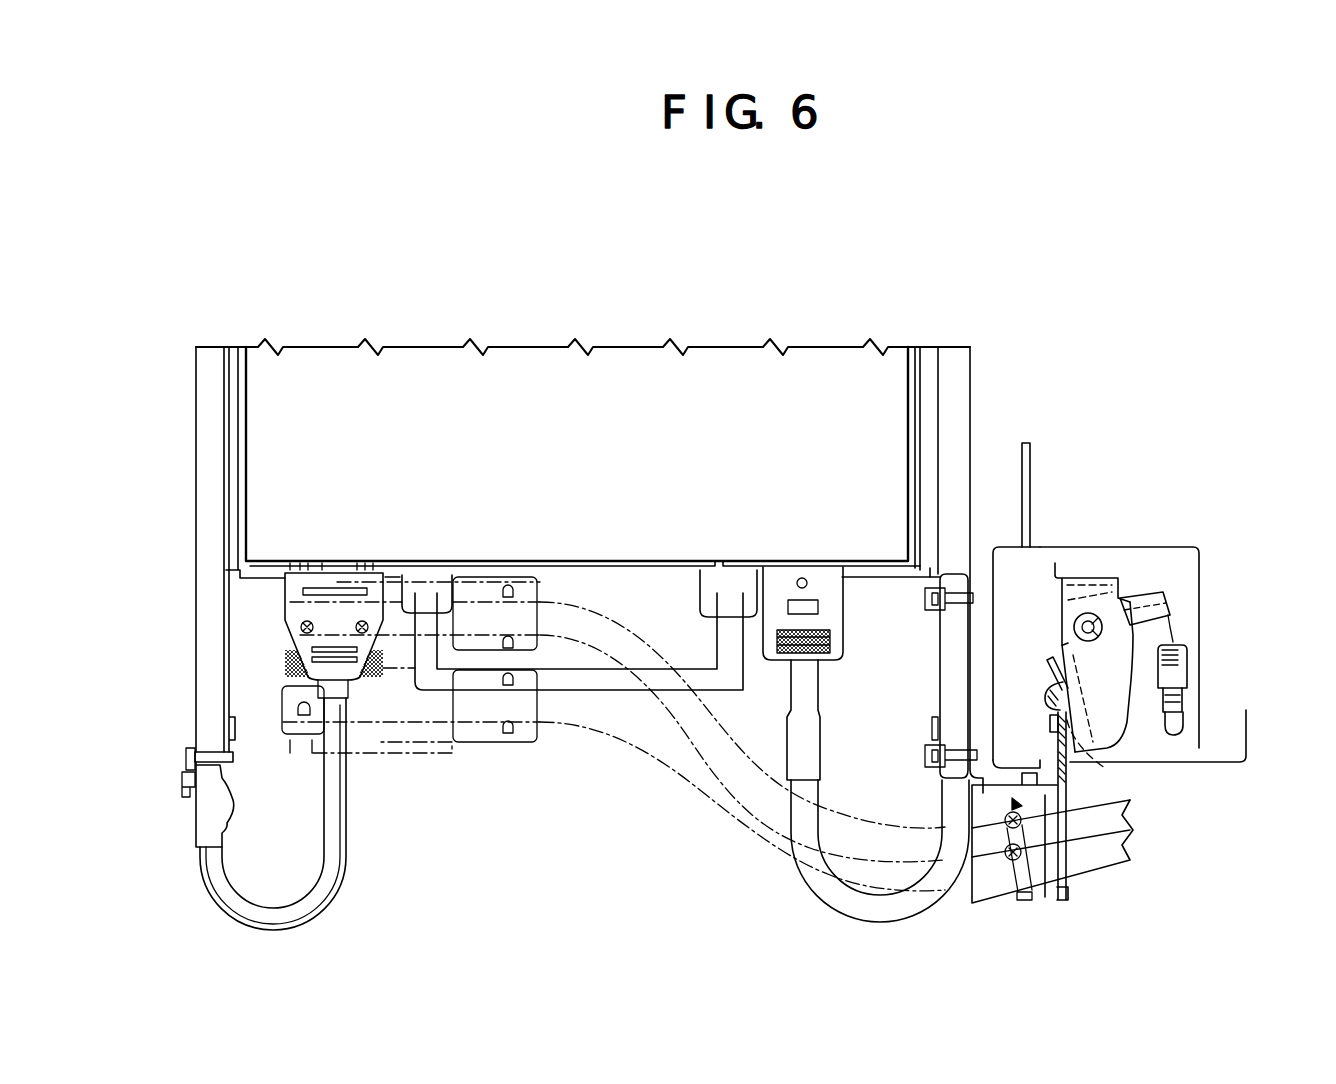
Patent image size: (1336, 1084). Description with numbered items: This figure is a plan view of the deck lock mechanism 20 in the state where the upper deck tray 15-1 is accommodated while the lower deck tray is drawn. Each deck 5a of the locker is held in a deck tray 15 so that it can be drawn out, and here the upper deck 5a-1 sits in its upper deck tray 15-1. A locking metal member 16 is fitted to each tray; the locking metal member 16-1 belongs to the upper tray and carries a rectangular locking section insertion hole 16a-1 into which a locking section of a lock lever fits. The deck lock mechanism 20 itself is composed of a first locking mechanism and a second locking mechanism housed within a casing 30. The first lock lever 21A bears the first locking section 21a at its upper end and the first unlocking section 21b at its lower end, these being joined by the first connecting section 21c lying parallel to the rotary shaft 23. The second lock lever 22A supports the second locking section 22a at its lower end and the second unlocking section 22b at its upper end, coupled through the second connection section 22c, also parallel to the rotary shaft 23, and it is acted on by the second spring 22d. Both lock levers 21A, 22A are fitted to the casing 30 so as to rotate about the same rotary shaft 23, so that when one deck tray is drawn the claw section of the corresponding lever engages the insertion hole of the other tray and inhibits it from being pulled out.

The deck 5a is at (485, 289).
The upper deck 5a-1 is at (583, 418).
The deck tray 15 is at (533, 396).
The upper deck tray 15-1 is at (631, 535).
The locking metal member 16 is at (0, 0).
The locking metal member 16-1 is at (1045, 663).
The locking section insertion hole 16a-1 is at (1050, 742).
The deck lock mechanism 20 is at (1072, 568).
The first lock lever 21A is at (1096, 568).
The first locking section 21a is at (1068, 740).
The first unlocking section 21b is at (1045, 693).
The first connecting section 21c is at (1087, 562).
The second lock lever 22A is at (1100, 580).
The second locking section 22a is at (1105, 768).
The second unlocking section 22b is at (1050, 663).
The second connection section 22c is at (1110, 572).
The second spring 22d is at (1187, 710).
The rotary shaft 23 is at (1110, 605).
The casing 30 is at (1198, 592).